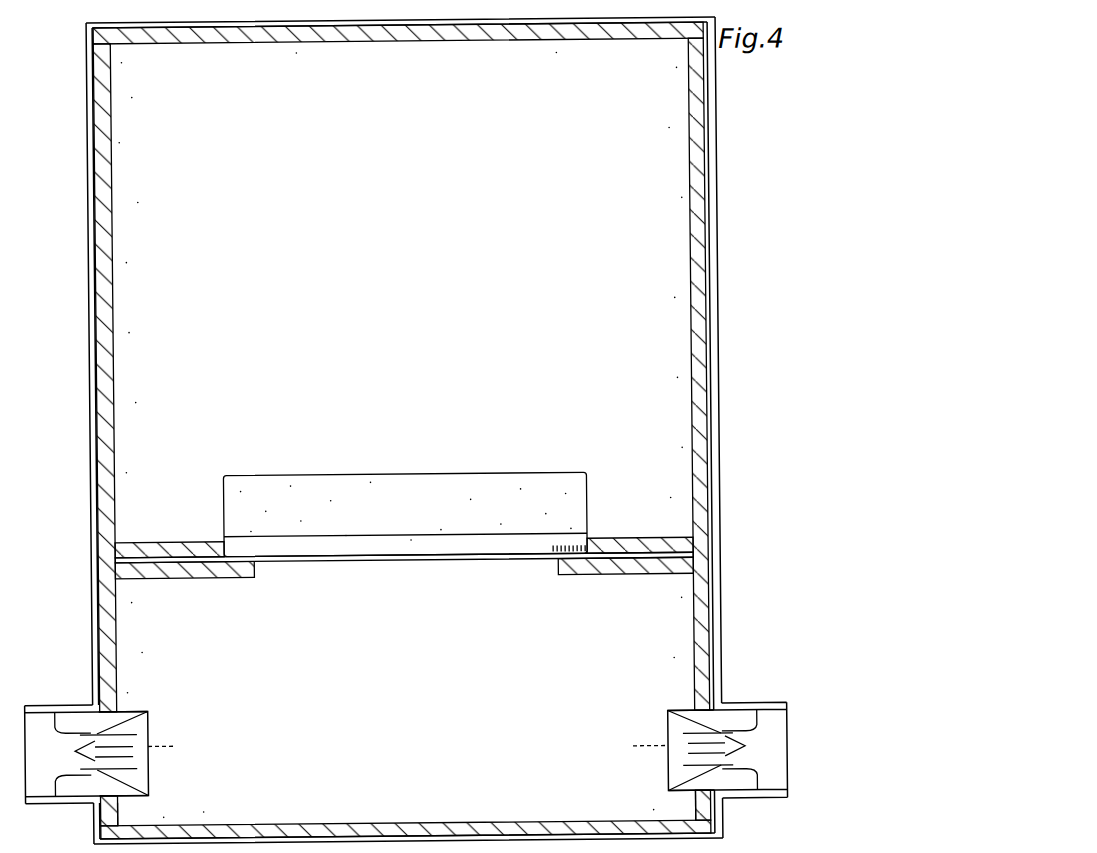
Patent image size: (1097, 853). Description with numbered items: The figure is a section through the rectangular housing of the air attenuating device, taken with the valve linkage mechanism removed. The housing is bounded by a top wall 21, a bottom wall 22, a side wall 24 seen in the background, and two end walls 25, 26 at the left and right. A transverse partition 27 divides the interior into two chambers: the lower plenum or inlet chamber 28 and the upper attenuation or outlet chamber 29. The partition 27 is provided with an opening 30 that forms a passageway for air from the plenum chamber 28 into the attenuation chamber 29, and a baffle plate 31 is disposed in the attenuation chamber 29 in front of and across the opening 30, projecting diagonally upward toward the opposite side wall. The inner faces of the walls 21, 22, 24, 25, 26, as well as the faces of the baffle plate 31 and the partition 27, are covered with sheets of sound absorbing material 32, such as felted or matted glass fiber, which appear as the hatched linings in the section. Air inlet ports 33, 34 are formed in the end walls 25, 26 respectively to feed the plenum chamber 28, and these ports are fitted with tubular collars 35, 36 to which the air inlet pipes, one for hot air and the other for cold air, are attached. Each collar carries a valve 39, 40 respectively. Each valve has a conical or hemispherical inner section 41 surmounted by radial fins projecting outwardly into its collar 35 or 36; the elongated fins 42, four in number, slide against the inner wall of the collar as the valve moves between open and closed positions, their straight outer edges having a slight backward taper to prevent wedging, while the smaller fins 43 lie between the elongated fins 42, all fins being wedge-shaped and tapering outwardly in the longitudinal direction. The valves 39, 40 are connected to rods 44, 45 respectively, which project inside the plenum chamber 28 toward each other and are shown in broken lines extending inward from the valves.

The top wall 21 is at (442, 28).
The bottom wall 22 is at (414, 832).
The side wall 24 is at (510, 217).
The end wall 25 is at (90, 278).
The end wall 26 is at (710, 229).
The transverse partition 27 is at (224, 572).
The plenum chamber 28 is at (355, 760).
The attenuation chamber 29 is at (393, 298).
The opening 30 is at (452, 490).
The baffle plate 31 is at (522, 488).
The sound absorbing material 32 is at (110, 410).
The air inlet port 33 is at (151, 809).
The air inlet port 34 is at (684, 798).
The tubular collar 35 is at (45, 700).
The tubular collar 36 is at (761, 710).
The valve 39 is at (142, 722).
The valve 40 is at (667, 709).
The conical inner section 41 is at (125, 738).
The elongated fins 42 is at (71, 715).
The smaller fins 43 is at (89, 745).
The rod 44 is at (167, 745).
The rod 45 is at (629, 747).